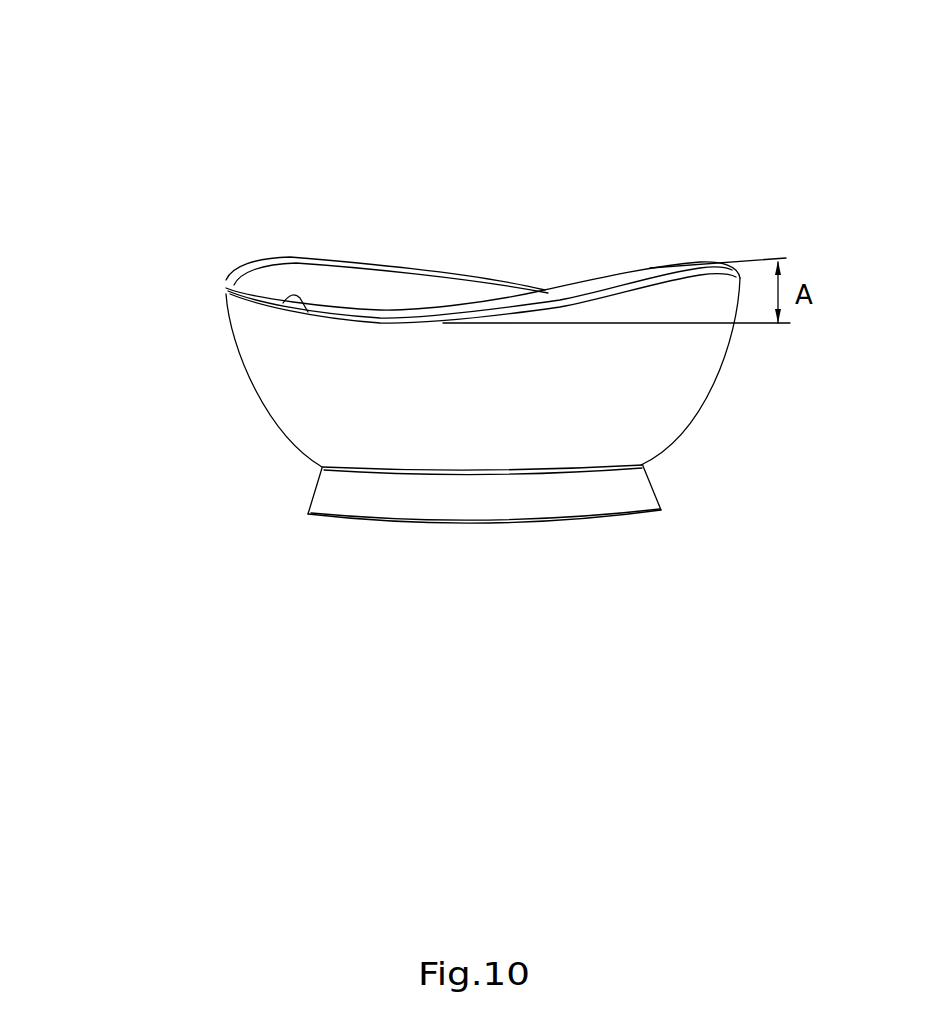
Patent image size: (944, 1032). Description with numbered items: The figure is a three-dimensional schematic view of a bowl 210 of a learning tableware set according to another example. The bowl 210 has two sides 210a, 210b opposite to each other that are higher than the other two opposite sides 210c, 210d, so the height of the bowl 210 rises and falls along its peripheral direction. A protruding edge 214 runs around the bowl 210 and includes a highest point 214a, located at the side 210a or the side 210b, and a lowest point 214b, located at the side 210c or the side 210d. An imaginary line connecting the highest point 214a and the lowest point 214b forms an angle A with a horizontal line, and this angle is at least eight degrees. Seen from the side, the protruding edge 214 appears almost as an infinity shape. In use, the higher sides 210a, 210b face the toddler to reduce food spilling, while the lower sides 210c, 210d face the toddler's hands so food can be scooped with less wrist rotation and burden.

The bowl 210 is at (606, 172).
The side 210a is at (242, 312).
The side 210b is at (736, 298).
The side 210c is at (350, 265).
The side 210d is at (478, 272).
The protruding edge 214 is at (285, 301).
The highest point 214a is at (706, 262).
The lowest point 214b is at (345, 290).